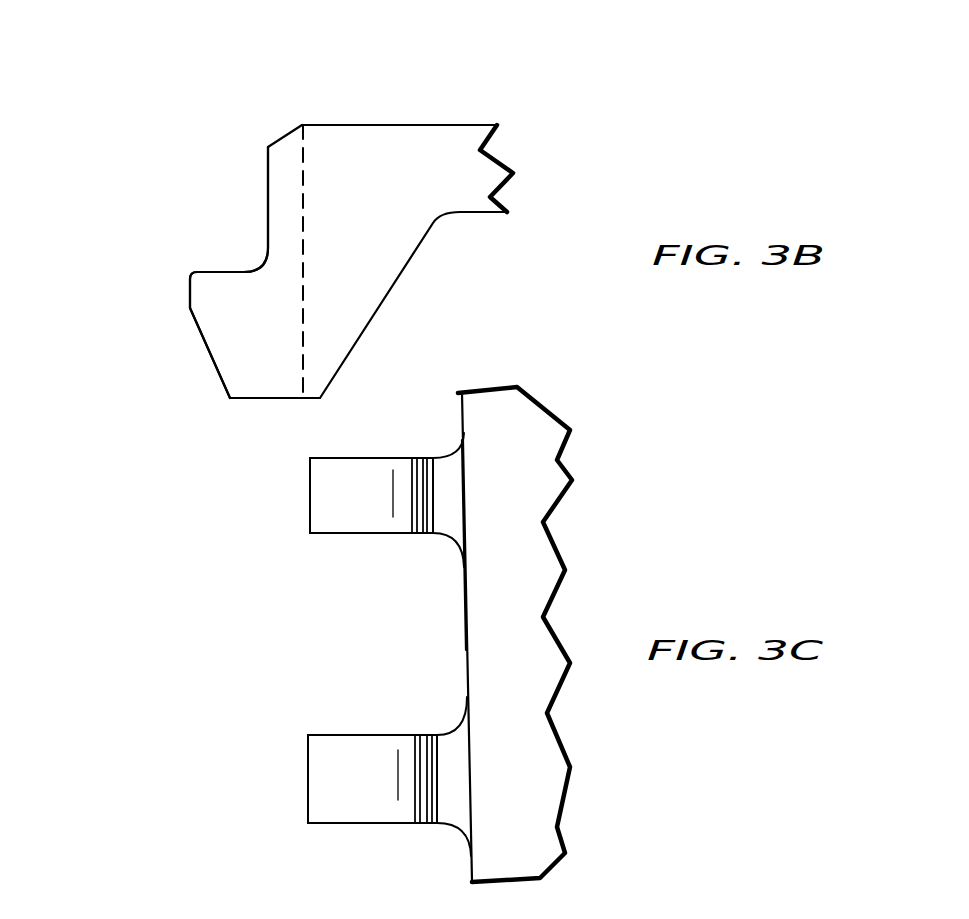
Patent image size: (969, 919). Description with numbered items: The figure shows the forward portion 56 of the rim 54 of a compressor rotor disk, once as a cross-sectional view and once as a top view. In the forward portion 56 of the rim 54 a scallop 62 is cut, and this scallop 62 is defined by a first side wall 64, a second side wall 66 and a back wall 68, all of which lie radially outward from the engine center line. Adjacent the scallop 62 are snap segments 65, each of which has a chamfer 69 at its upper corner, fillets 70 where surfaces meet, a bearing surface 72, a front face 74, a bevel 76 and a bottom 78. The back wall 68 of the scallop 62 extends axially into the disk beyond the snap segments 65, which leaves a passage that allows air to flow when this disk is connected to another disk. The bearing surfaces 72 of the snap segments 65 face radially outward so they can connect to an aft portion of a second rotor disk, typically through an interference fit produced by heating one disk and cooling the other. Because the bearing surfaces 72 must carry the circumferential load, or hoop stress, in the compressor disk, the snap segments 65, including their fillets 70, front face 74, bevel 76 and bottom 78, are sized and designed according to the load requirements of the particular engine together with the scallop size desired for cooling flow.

In FIG. 3B, the rim 54 is at (532, 98).
In FIG. 3B, the forward portion 56 is at (350, 90).
In FIG. 3C, the scallop 62 is at (355, 627).
In FIG. 3C, the side wall 64 is at (372, 533).
In FIG. 3B, the snap segment 65 is at (138, 110).
In FIG. 3C, the snap segment 65 is at (285, 505).
In FIG. 3C, the side wall 66 is at (368, 735).
In FIG. 3B, the back wall 68 is at (305, 283).
In FIG. 3C, the back wall 68 is at (465, 659).
In FIG. 3B, the chamfer 69 is at (268, 128).
In FIG. 3B, the fillet 70 is at (265, 242).
In FIG. 3C, the fillet 70 is at (428, 490).
In FIG. 3B, the bearing surface 72 is at (207, 270).
In FIG. 3C, the bearing surface 72 is at (325, 472).
In FIG. 3B, the front face 74 is at (188, 288).
In FIG. 3C, the front face 74 is at (310, 523).
In FIG. 3B, the bevel 76 is at (203, 345).
In FIG. 3B, the bottom 78 is at (250, 398).